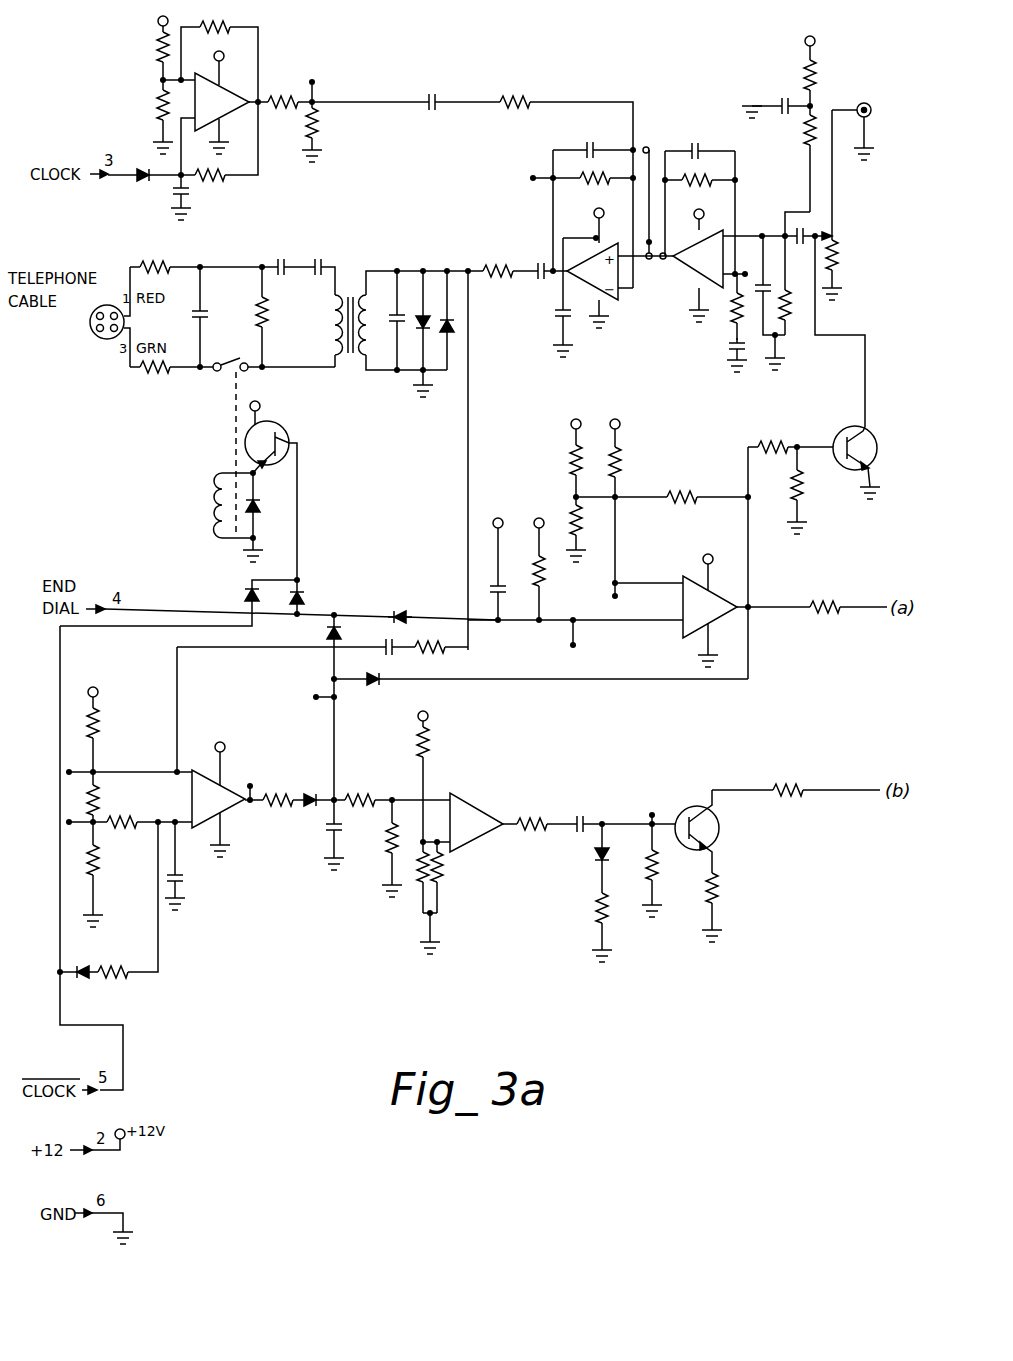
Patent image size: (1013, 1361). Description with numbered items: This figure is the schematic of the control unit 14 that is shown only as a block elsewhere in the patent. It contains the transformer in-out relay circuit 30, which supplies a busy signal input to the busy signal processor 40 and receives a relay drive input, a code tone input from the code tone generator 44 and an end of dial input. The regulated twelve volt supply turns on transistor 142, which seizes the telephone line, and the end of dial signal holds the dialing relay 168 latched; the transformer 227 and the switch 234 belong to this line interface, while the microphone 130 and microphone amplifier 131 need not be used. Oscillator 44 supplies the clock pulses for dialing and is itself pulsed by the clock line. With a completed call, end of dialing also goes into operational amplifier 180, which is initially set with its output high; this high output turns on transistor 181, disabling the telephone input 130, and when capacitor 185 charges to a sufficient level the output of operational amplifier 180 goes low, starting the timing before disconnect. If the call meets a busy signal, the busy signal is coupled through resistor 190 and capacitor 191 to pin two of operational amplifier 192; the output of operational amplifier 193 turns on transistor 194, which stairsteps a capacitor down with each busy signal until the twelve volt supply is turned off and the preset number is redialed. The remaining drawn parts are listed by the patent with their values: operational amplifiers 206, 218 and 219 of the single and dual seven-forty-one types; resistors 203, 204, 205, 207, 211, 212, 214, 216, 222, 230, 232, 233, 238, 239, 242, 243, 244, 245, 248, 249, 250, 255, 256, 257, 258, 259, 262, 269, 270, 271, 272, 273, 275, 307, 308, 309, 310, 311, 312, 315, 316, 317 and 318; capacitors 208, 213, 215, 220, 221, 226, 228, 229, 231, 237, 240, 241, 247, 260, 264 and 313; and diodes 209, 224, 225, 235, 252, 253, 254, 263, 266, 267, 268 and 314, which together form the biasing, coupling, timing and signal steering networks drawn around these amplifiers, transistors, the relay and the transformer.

The control unit 14 is at (780, 990).
The transformer in-out relay circuit 30 is at (343, 380).
The busy signal processor 40 is at (532, 766).
The code tone generator 44 is at (92, 72).
The microphone 130 is at (872, 111).
The microphone amplifier 131 is at (688, 288).
The transistor 142 is at (273, 422).
The dialing relay 168 is at (214, 492).
The operational amplifier 180 is at (690, 578).
The transistor 181 is at (877, 440).
The capacitor 185 is at (492, 583).
The resistor 190 is at (448, 652).
The capacitor 191 is at (393, 658).
The operational amplifier 192 is at (200, 768).
The operational amplifier 193 is at (505, 768).
The transistor 194 is at (690, 808).
The resistor 203 is at (160, 46).
The resistor 204 is at (160, 110).
The resistor 205 is at (236, 26).
The operational amplifier 206 is at (228, 76).
The resistor 207 is at (216, 182).
The capacitor 208 is at (174, 192).
The diode 209 is at (138, 168).
The resistor 211 is at (284, 108).
The resistor 212 is at (320, 120).
The capacitor 213 is at (432, 94).
The resistor 214 is at (514, 96).
The capacitor 215 is at (590, 144).
The resistor 216 is at (584, 176).
The operational amplifier 218 is at (580, 224).
The operational amplifier 219 is at (714, 226).
The capacitor 220 is at (559, 320).
The capacitor 221 is at (538, 264).
The resistor 222 is at (495, 268).
The diode 224 is at (454, 330).
The diode 225 is at (432, 322).
The capacitor 226 is at (397, 310).
The transformer 227 is at (368, 290).
The capacitor 228 is at (338, 238).
The capacitor 229 is at (278, 262).
The resistor 230 is at (266, 312).
The capacitor 231 is at (200, 305).
The resistor 232 is at (152, 262).
The resistor 233 is at (162, 371).
The switch 234 is at (228, 378).
The diode 235 is at (262, 509).
The capacitor 237 is at (712, 123).
The resistor 238 is at (710, 178).
The resistor 239 is at (732, 312).
The capacitor 240 is at (732, 350).
The capacitor 241 is at (786, 322).
The resistor 242 is at (813, 62).
The resistor 243 is at (815, 125).
The resistor 244 is at (776, 304).
The resistor 245 is at (790, 100).
The capacitor 247 is at (802, 228).
The resistor 248 is at (842, 252).
The resistor 249 is at (790, 416).
The resistor 250 is at (800, 480).
The diode 252 is at (246, 596).
The diode 253 is at (306, 592).
The diode 254 is at (90, 980).
The resistor 255 is at (132, 970).
The resistor 256 is at (97, 718).
The resistor 257 is at (152, 764).
The resistor 258 is at (96, 870).
The resistor 259 is at (114, 820).
The capacitor 260 is at (181, 880).
The resistor 262 is at (286, 796).
The diode 263 is at (308, 806).
The capacitor 264 is at (330, 836).
The diode 266 is at (368, 596).
The diode 267 is at (372, 688).
The diode 268 is at (430, 595).
The resistor 269 is at (544, 571).
The resistor 270 is at (572, 452).
The resistor 271 is at (572, 515).
The resistor 272 is at (620, 460).
The resistor 273 is at (672, 492).
The resistor 275 is at (812, 613).
The resistor 307 is at (385, 775).
The resistor 308 is at (391, 825).
The resistor 309 is at (428, 742).
The resistor 310 is at (436, 868).
The resistor 311 is at (443, 886).
The resistor 312 is at (526, 829).
The capacitor 313 is at (598, 782).
The diode 314 is at (597, 858).
The resistor 315 is at (597, 906).
The resistor 316 is at (660, 888).
The resistor 317 is at (718, 890).
The resistor 318 is at (806, 763).